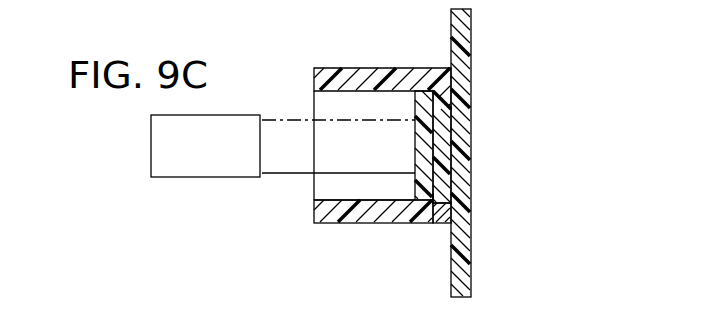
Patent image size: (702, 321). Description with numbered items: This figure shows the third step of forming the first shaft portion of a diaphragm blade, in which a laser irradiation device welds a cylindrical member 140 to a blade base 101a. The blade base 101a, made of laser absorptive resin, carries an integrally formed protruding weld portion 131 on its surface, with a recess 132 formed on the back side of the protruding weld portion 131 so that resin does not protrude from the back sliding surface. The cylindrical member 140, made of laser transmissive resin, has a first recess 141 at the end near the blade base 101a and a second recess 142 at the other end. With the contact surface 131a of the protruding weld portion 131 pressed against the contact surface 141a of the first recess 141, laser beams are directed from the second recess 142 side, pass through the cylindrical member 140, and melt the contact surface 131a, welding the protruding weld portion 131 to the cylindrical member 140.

The blade base 101a is at (471, 31).
The protruding weld portion 131 is at (443, 123).
The contact surface 131a is at (445, 93).
The recess 132 is at (462, 175).
The cylindrical member 140 is at (348, 78).
The first recess 141 is at (443, 203).
The contact surface 141a is at (433, 193).
The second recess 142 is at (343, 192).